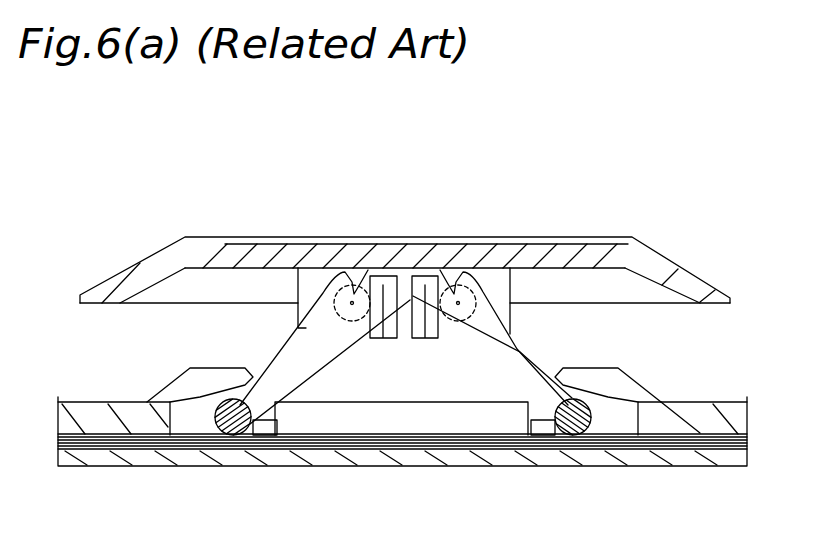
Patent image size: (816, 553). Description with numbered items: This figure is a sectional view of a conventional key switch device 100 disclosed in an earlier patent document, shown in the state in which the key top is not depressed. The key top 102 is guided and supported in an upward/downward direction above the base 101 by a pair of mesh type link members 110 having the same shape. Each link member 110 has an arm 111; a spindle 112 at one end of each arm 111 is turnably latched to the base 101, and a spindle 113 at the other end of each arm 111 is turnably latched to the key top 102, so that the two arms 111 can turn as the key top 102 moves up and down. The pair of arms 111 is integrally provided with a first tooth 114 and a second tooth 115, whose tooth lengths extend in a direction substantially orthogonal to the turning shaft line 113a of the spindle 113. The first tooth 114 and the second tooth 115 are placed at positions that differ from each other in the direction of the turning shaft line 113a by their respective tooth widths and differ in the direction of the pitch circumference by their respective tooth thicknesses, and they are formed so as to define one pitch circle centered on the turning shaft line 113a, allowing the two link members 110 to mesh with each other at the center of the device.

The key switch device 100 is at (266, 184).
The base 101 is at (710, 402).
The key top 102 is at (585, 237).
The mesh type link members 110 is at (287, 352).
The arm 111 is at (300, 377).
The spindle 112 is at (213, 428).
The spindle 113 is at (335, 278).
The turning shaft line 113a is at (352, 300).
The first tooth 114 is at (422, 280).
The second tooth 115 is at (409, 276).